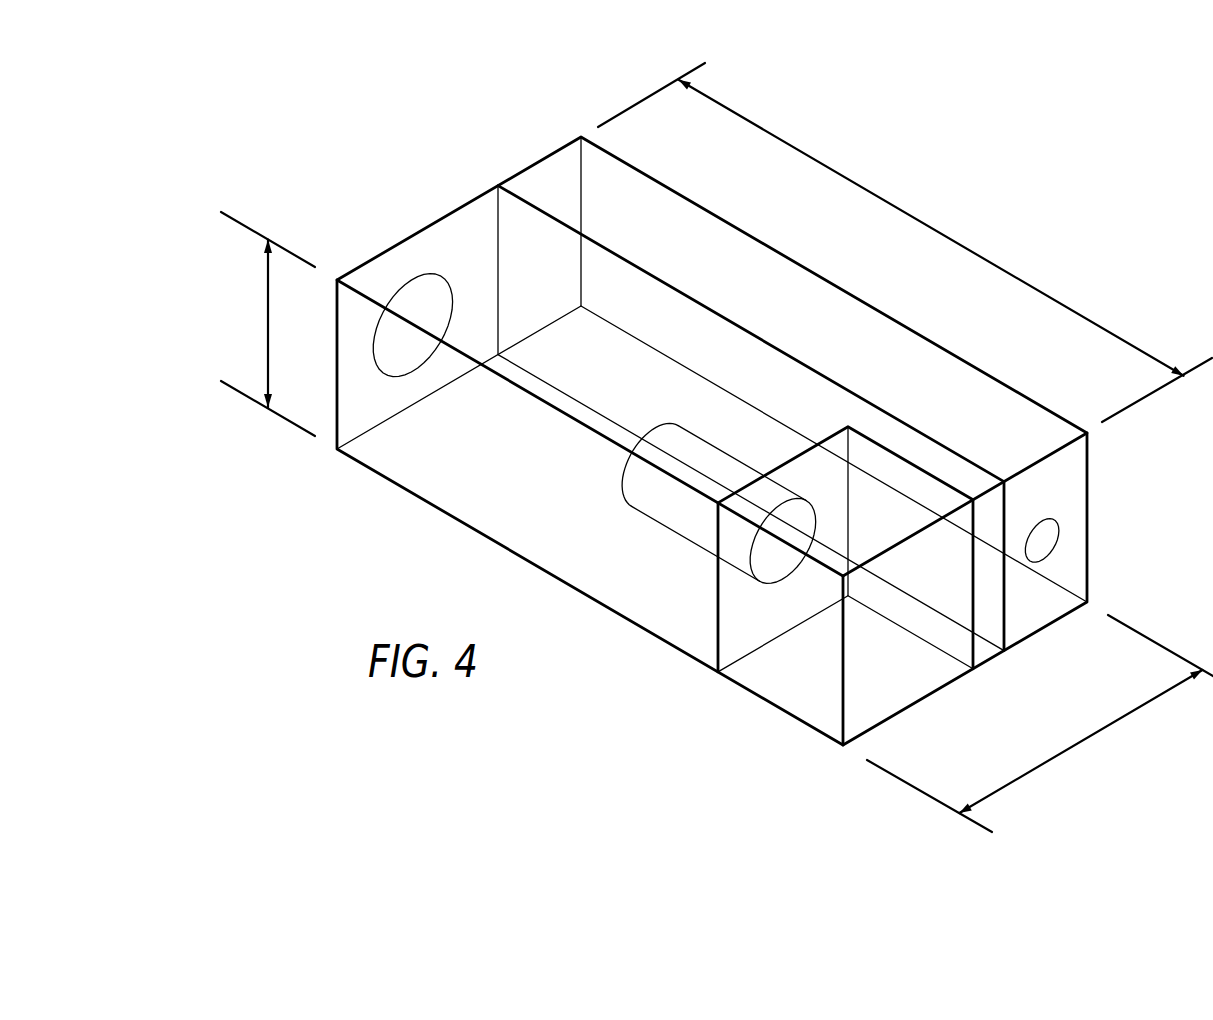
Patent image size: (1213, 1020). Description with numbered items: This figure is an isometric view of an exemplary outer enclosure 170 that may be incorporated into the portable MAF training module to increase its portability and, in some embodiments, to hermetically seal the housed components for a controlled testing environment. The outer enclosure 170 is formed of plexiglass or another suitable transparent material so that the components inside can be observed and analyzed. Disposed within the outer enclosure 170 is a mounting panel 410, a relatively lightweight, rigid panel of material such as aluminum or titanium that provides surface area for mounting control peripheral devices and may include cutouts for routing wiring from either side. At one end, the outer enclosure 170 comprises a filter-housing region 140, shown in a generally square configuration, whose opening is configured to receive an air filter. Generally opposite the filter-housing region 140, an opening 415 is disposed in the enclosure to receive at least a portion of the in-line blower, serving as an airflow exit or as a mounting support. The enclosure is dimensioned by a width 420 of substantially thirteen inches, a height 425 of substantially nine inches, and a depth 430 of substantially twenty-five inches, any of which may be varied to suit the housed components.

The outer enclosure 170 is at (390, 112).
The filter-housing region 140 is at (811, 684).
The mounting panel 410 is at (775, 347).
The opening 415 is at (410, 281).
The width 420 is at (1075, 745).
The height 425 is at (268, 320).
The depth 430 is at (929, 218).